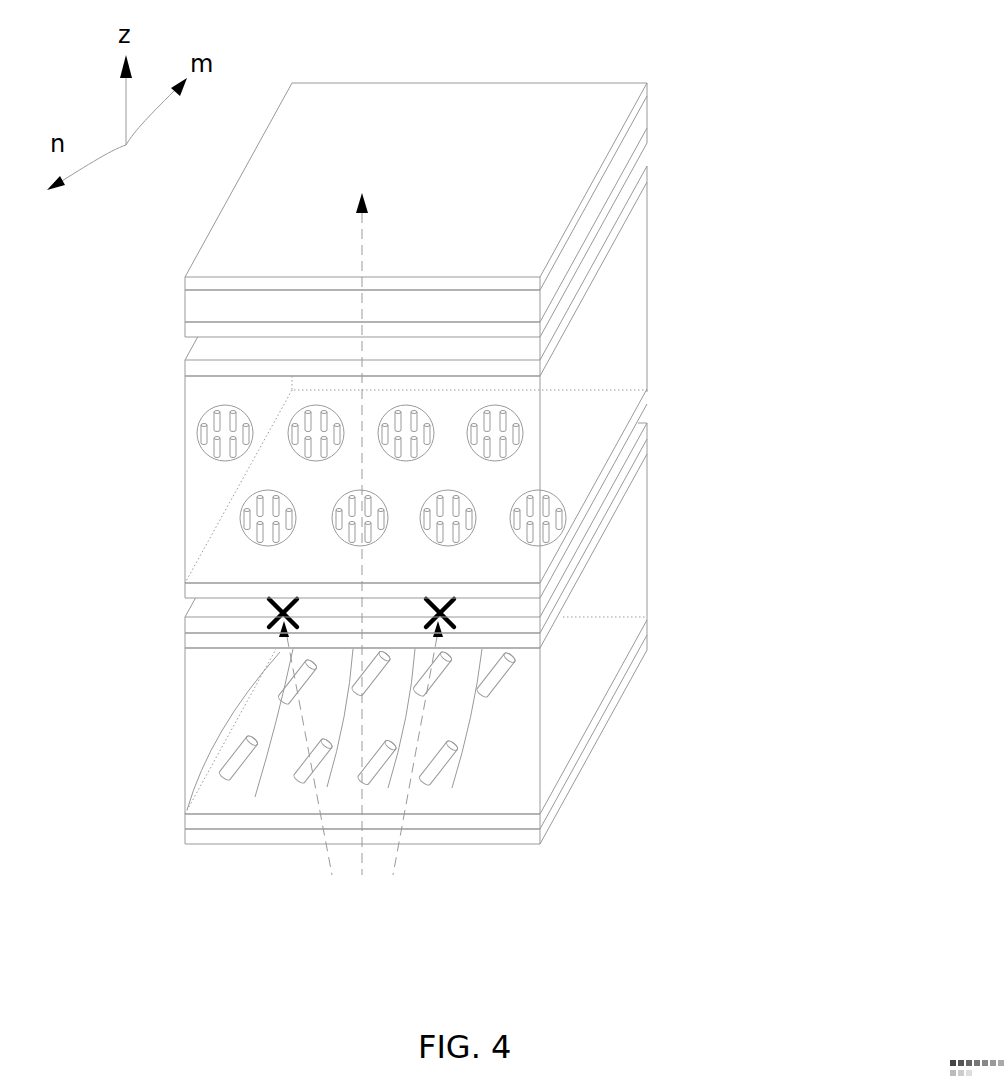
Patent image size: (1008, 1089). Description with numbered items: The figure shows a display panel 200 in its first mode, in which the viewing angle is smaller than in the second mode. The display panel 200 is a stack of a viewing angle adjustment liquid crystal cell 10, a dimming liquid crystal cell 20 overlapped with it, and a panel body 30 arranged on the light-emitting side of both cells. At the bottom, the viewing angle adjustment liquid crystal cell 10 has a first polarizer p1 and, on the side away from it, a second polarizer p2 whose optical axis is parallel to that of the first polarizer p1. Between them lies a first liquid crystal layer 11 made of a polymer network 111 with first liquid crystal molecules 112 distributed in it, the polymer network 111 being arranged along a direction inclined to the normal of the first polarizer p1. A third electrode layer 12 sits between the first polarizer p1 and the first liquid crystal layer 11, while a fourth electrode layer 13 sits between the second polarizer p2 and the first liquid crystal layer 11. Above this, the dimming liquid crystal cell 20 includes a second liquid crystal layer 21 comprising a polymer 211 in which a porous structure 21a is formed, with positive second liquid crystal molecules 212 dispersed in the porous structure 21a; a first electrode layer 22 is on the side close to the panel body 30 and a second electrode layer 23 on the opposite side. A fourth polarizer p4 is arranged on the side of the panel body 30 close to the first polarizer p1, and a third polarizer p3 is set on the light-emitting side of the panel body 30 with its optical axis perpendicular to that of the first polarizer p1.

The display panel 200 is at (770, 70).
The third polarizer p3 is at (610, 157).
The panel body 30 is at (590, 217).
The fourth polarizer p4 is at (565, 290).
The dimming liquid crystal cell 20 is at (808, 312).
The first electrode layer 22 is at (567, 327).
The second liquid crystal layer 21 is at (745, 405).
The polymer 211 is at (562, 477).
The second liquid crystal molecules 212 is at (510, 440).
The porous structure 21a is at (180, 443).
The second electrode layer 23 is at (587, 513).
The second polarizer p2 is at (580, 554).
The viewing angle adjustment liquid crystal cell 10 is at (783, 580).
The third electrode layer 12 is at (580, 607).
The first liquid crystal layer 11 is at (725, 638).
The polymer network 111 is at (518, 718).
The first liquid crystal molecules 112 is at (503, 672).
The fourth electrode layer 13 is at (565, 782).
The first polarizer p1 is at (555, 825).